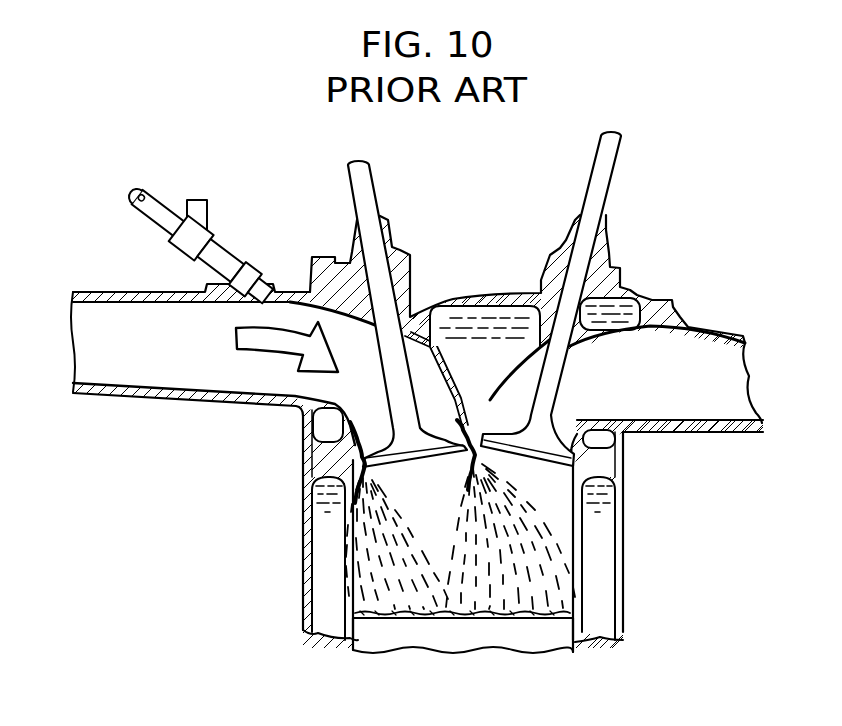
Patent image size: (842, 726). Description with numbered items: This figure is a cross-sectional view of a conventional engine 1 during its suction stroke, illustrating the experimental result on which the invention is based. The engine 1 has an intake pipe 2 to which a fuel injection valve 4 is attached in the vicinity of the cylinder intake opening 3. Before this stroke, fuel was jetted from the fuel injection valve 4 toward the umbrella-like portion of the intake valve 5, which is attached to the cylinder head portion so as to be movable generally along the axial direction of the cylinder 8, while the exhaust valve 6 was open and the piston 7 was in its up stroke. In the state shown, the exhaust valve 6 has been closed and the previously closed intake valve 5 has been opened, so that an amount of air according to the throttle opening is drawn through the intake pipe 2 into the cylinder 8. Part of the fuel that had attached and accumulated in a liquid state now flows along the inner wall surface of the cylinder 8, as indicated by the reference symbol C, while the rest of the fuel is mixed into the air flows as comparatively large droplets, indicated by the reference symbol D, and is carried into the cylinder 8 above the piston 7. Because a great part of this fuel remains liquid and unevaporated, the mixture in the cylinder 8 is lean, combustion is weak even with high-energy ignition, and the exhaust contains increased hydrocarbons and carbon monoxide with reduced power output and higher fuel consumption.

The engine 1 is at (623, 535).
The intake pipe 2 is at (121, 353).
The cylinder intake opening 3 is at (333, 383).
The fuel injection valve 4 is at (214, 253).
The intake valve 5 is at (367, 196).
The exhaust valve 6 is at (600, 185).
The piston 7 is at (537, 635).
The cylinder 8 is at (360, 618).
The fuel flowing along cylinder inner wall C is at (353, 532).
The fuel droplets D is at (467, 475).